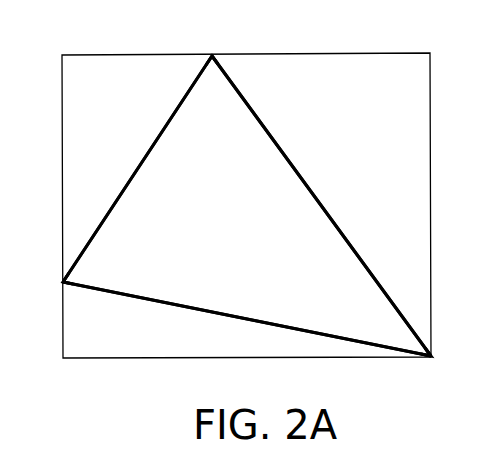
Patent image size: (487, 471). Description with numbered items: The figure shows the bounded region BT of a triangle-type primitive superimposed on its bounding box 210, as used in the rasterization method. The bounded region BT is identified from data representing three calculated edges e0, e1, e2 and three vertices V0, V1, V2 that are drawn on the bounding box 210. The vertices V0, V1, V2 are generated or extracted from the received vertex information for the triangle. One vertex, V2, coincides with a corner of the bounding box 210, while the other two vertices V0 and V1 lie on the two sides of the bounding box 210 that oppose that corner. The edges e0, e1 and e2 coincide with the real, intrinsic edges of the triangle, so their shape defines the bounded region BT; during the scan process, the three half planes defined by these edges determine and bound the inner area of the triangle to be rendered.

The bounding box 210 is at (365, 53).
The bounded region BT is at (248, 240).
The edge e0 is at (148, 148).
The edge e1 is at (127, 292).
The edge e2 is at (300, 167).
The vertex V0 is at (215, 49).
The vertex V1 is at (54, 284).
The vertex V2 is at (439, 363).